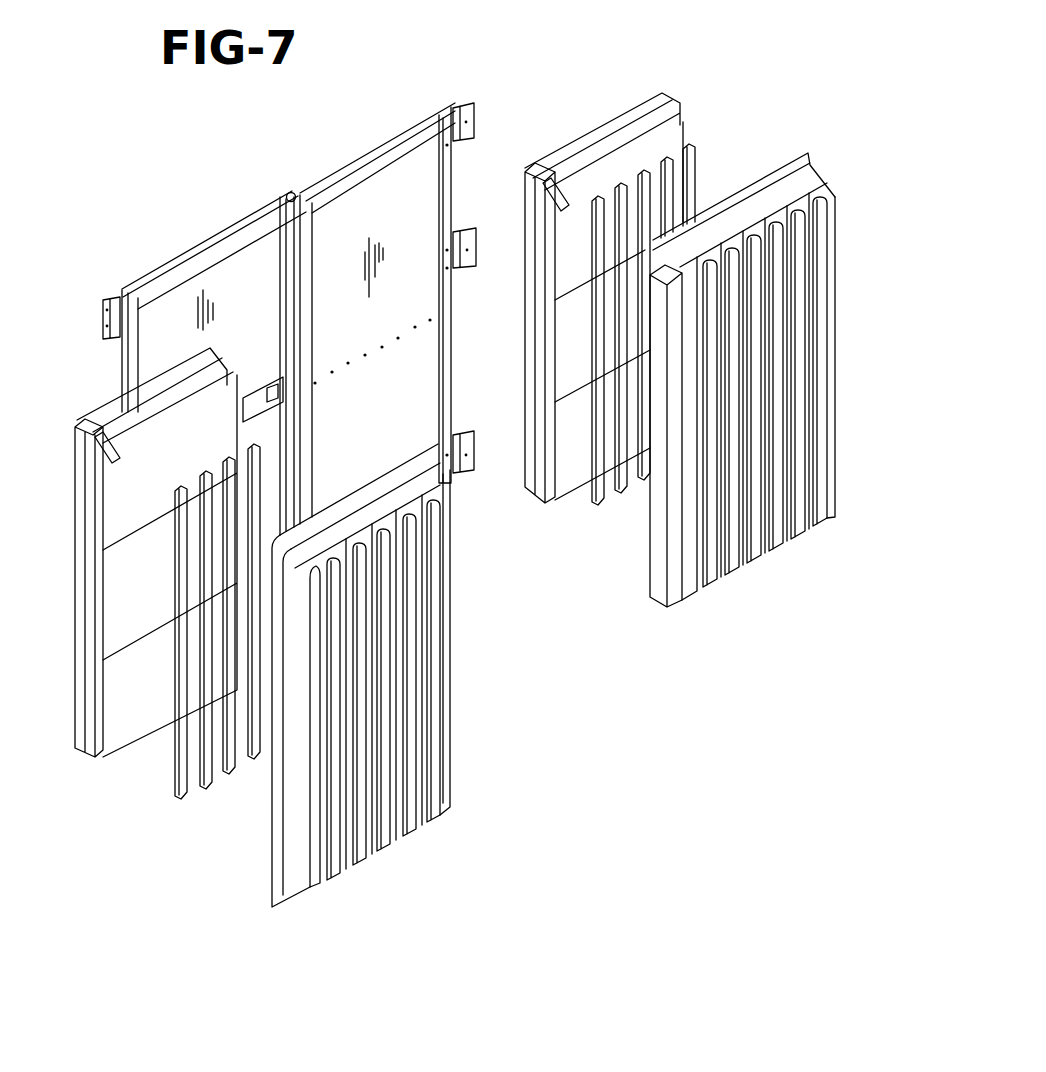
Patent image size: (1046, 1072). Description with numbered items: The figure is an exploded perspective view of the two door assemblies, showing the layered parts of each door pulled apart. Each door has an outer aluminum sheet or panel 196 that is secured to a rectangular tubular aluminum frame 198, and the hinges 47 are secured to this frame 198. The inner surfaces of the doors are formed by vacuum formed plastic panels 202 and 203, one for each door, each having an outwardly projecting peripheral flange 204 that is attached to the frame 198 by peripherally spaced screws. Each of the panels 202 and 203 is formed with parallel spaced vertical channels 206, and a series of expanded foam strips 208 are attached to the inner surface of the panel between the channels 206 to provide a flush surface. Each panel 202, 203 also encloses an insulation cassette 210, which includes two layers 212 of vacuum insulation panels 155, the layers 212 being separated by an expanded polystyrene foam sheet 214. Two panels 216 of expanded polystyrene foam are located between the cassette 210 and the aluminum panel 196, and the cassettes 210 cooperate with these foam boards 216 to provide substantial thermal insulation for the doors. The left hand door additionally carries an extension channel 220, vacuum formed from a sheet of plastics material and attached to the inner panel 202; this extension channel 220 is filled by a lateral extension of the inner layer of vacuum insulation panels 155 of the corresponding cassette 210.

The hinge 47 is at (103, 307).
The vacuum insulation panel 155 is at (552, 320).
The outer aluminum panel 196 is at (250, 252).
The rectangular tubular aluminum frame 198 is at (197, 252).
The inner vacuum formed panel 202 is at (838, 312).
The inner vacuum formed panel 203 is at (455, 668).
The peripheral flange 204 is at (364, 490).
The vertical channel 206 is at (415, 840).
The expanded foam strip 208 is at (253, 760).
The insulation cassette 210 is at (120, 574).
The layer of vacuum insulation panels 212 is at (178, 400).
The expanded polystyrene foam sheet 214 is at (147, 410).
The expanded polystyrene foam panel 216 is at (208, 355).
The extension channel 220 is at (682, 588).